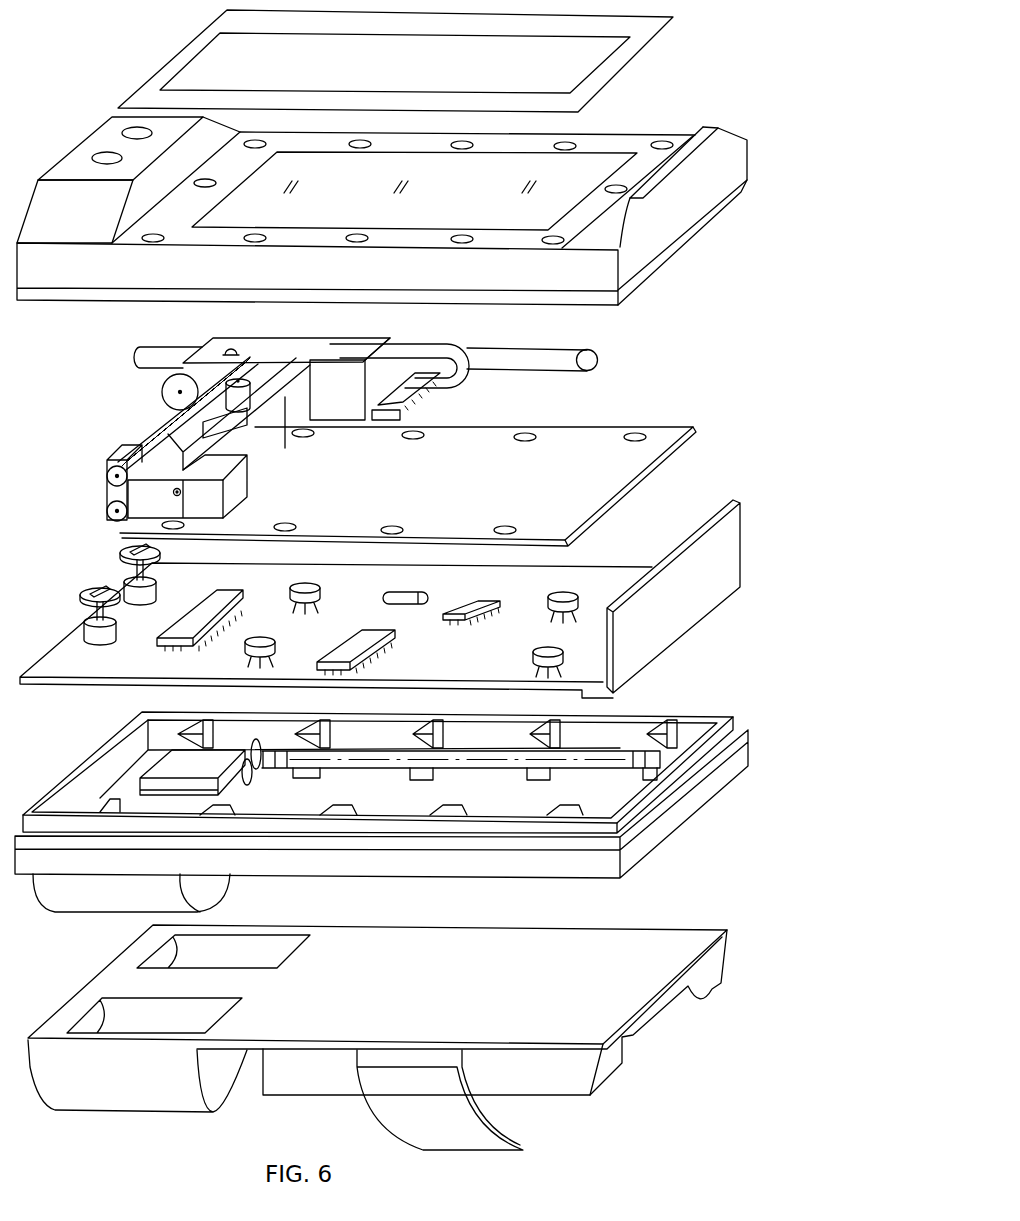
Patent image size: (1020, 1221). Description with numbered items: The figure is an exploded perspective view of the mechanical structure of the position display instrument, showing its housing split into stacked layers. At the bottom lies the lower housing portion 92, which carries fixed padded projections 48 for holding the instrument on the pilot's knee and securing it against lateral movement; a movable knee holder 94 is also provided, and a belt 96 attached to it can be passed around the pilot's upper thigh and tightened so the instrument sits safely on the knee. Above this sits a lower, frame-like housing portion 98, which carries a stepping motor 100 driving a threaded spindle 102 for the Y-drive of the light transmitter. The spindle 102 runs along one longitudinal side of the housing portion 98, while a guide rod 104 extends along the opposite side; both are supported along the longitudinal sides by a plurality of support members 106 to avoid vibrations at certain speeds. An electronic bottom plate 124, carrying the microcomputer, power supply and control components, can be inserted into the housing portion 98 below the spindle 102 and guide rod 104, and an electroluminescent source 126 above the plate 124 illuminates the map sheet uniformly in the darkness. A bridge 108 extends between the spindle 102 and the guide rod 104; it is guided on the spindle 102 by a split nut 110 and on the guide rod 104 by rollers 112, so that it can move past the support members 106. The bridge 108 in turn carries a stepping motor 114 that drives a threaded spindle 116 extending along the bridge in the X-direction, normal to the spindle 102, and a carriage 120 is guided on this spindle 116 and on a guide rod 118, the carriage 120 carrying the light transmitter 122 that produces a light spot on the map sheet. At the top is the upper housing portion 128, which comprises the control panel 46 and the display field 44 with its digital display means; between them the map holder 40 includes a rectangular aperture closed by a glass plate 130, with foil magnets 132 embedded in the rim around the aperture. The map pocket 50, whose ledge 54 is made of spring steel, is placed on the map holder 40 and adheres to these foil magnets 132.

The map holder 40 is at (478, 129).
The display field 44 is at (680, 143).
The control panel 46 is at (95, 135).
The padded elements 48 is at (128, 1100).
The map pocket 50 is at (150, 50).
The spring steel ledge 54 is at (365, 27).
The lower housing portion 92 is at (113, 968).
The movable knee holder 94 is at (543, 1087).
The belt 96 is at (440, 1093).
The frame-like housing portion 98 is at (658, 832).
The stepping motor 100 is at (218, 769).
The threaded spindle 102 is at (595, 750).
The guide rod 104 is at (502, 814).
The support members 106 is at (443, 733).
The bridge 108 is at (253, 447).
The split nut 110 is at (270, 343).
The rollers 112 is at (108, 510).
The stepping motor 114 is at (162, 380).
The threaded spindle 116 is at (165, 430).
The guide rod 118 is at (286, 448).
The carriage 120 is at (253, 402).
The light transmitter 122 is at (108, 458).
The electronic bottom plate 124 is at (82, 682).
The electroluminescent source 126 is at (526, 474).
The upper housing portion 128 is at (634, 134).
The glass plate 130 is at (603, 163).
The foil magnets 132 is at (212, 186).